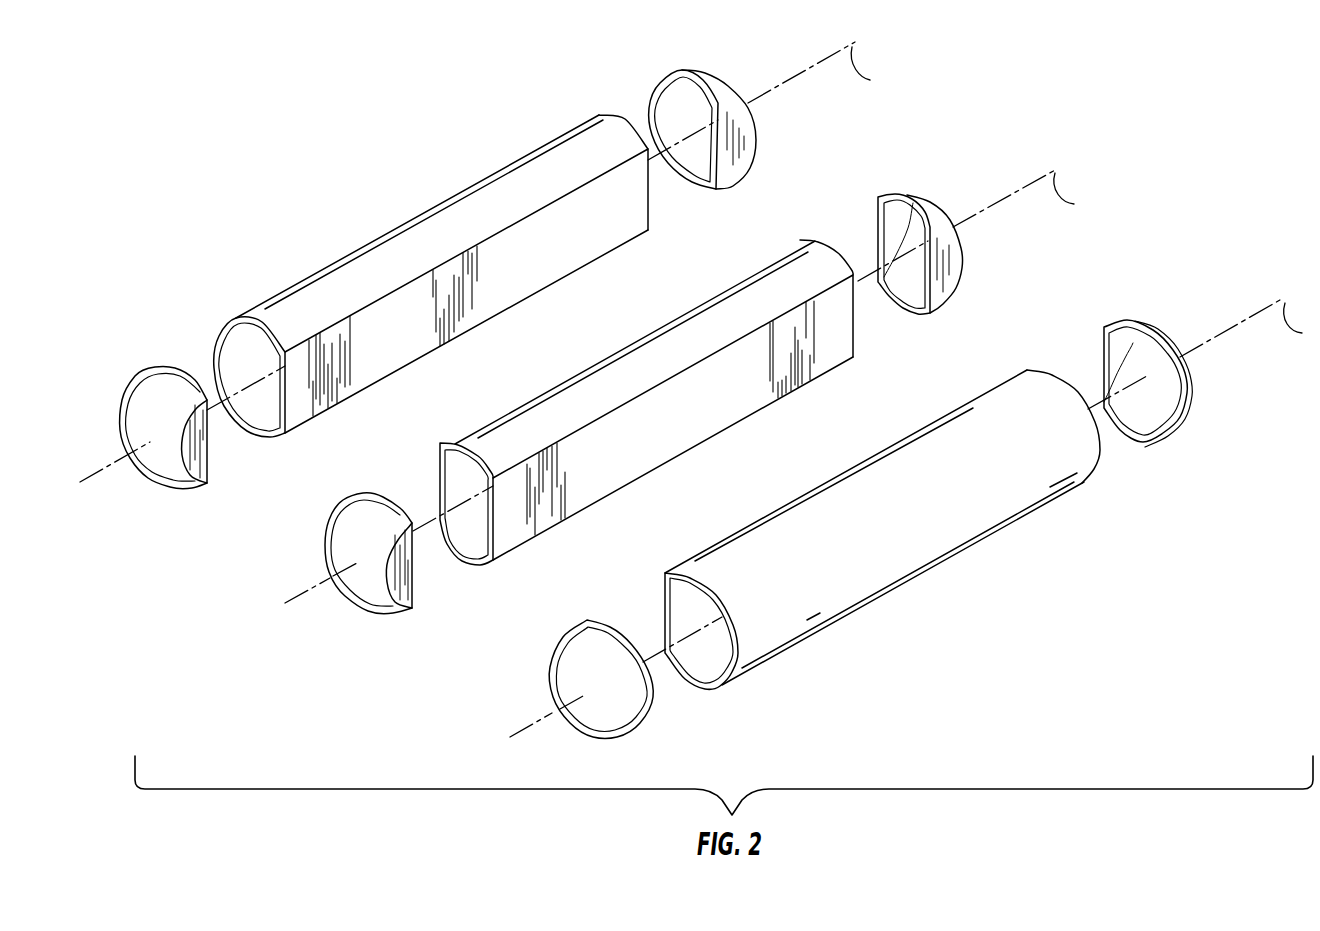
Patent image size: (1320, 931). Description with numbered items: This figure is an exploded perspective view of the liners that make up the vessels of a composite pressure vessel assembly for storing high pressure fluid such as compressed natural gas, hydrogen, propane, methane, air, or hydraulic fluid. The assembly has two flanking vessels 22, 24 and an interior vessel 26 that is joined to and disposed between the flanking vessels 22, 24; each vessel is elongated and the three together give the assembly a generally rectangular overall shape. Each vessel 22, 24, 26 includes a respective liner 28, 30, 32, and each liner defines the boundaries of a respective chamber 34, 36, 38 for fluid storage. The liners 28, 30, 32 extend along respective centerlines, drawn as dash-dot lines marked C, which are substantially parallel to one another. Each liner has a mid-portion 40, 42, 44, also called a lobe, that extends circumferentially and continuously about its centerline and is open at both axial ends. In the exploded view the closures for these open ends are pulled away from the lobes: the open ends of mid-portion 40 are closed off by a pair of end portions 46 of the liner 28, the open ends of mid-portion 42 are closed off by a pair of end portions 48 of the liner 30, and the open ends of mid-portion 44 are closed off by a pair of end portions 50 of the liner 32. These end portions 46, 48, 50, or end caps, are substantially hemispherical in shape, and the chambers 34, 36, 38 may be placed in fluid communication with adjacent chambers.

The flanking vessel 22 is at (482, 267).
The flanking vessel 24 is at (914, 504).
The interior vessel 26 is at (687, 394).
The liner 28 is at (431, 275).
The liner 30 is at (882, 529).
The liner 32 is at (646, 402).
The chamber 34 is at (260, 372).
The chamber 36 is at (701, 624).
The chamber 38 is at (475, 492).
The mid-portion 40 is at (385, 384).
The mid-portion 42 is at (817, 630).
The mid-portion 44 is at (608, 494).
The end portion 46 is at (683, 67).
The end portion 48 is at (1187, 392).
The end portion 50 is at (947, 201).